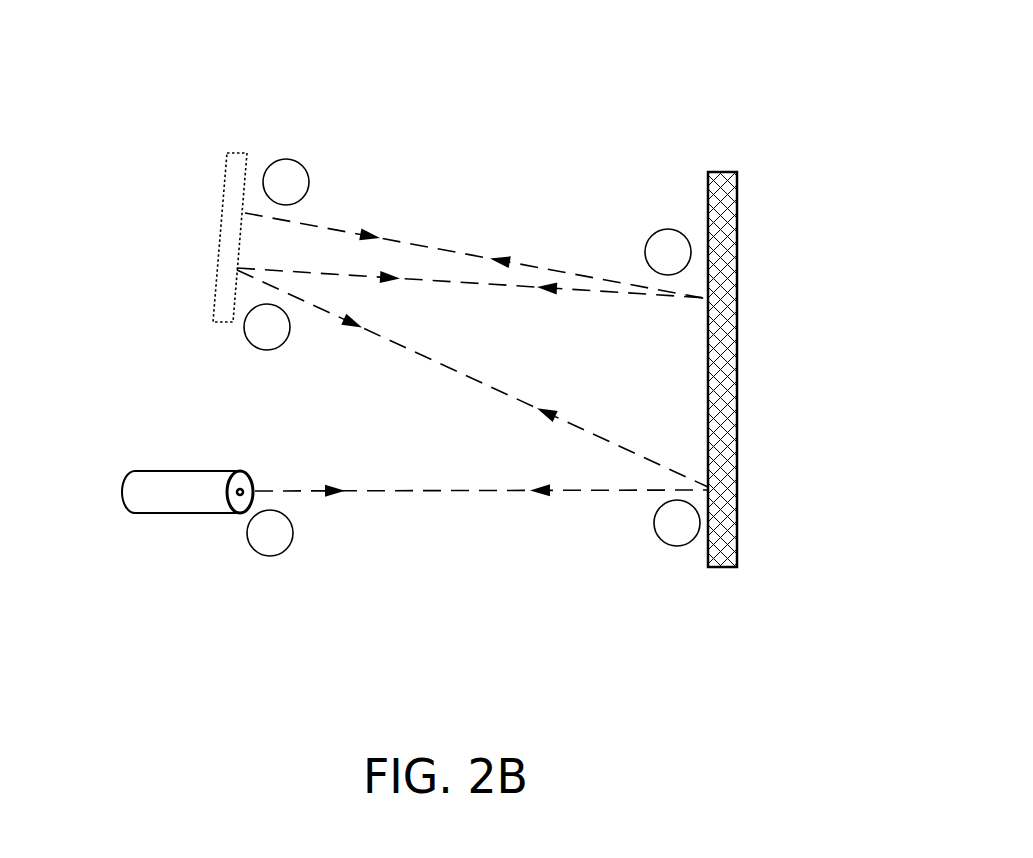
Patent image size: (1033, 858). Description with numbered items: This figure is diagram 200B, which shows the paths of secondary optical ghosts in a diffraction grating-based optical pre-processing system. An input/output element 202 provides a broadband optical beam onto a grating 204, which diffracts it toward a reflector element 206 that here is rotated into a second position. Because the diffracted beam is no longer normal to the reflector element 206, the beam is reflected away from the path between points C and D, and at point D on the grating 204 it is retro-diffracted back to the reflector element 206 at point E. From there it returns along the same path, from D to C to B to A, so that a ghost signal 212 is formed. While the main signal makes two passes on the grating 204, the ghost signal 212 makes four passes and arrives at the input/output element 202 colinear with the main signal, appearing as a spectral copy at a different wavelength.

The diagram 200B is at (112, 33).
The input/output element 202 is at (162, 472).
The grating 204 is at (737, 178).
The reflector element 206 is at (246, 163).
The ghost signal 212 is at (467, 378).